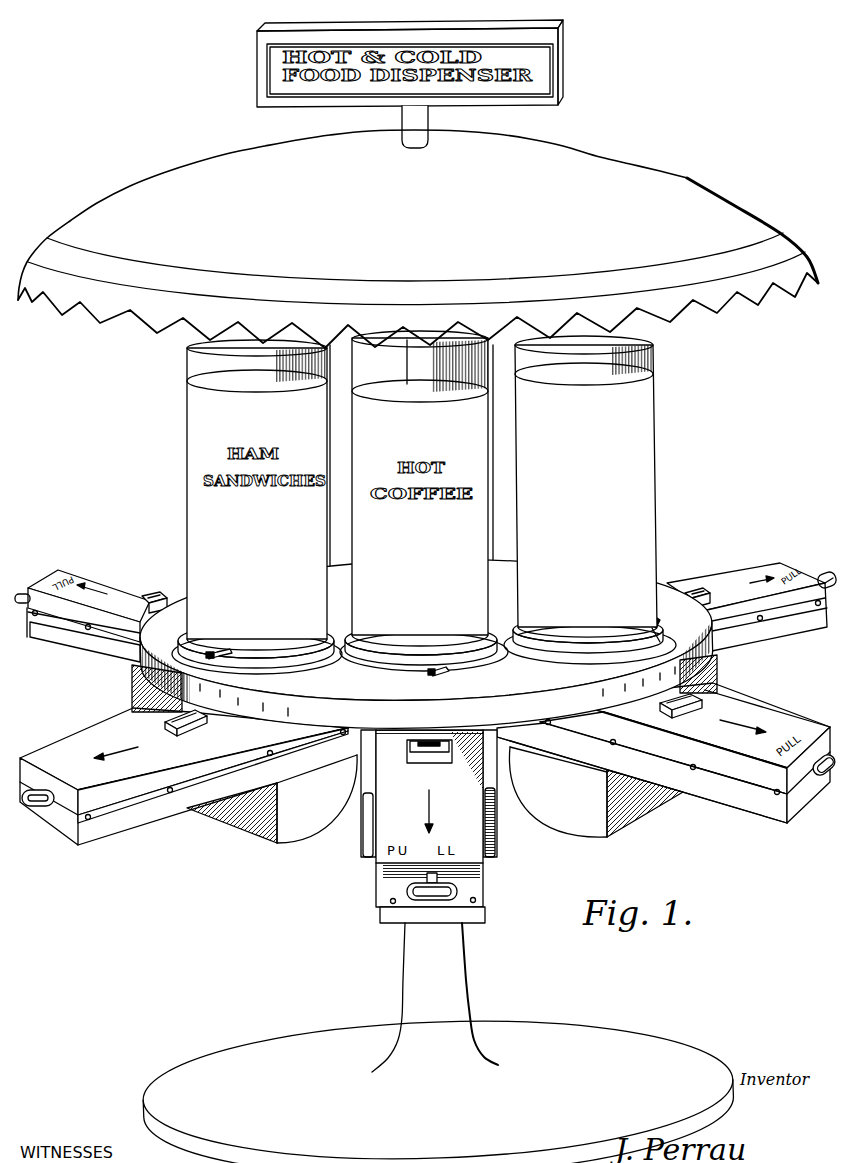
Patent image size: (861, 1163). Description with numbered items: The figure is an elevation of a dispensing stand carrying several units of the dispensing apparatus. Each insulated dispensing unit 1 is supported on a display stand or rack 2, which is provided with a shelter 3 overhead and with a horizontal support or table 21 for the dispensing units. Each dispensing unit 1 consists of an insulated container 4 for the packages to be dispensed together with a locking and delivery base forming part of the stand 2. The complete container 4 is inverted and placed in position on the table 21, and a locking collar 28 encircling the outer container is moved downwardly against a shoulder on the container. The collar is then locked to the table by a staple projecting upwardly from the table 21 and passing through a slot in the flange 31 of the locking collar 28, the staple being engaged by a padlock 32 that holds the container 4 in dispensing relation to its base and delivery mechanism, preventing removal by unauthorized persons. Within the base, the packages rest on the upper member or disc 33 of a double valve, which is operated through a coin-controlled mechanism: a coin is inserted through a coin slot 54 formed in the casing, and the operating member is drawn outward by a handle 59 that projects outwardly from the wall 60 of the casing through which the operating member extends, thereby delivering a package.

The insulated dispensing unit 1 is at (603, 500).
The display stand 2 is at (450, 938).
The shelter 3 is at (687, 178).
The insulated container 4 is at (657, 472).
The table 21 is at (290, 700).
The locking collar 28 is at (558, 637).
The flange 31 is at (192, 622).
The padlock 32 is at (498, 659).
The upper valve member 33 is at (258, 827).
The coin slot 54 is at (132, 686).
The handle 59 is at (50, 812).
The casing wall 60 is at (118, 823).